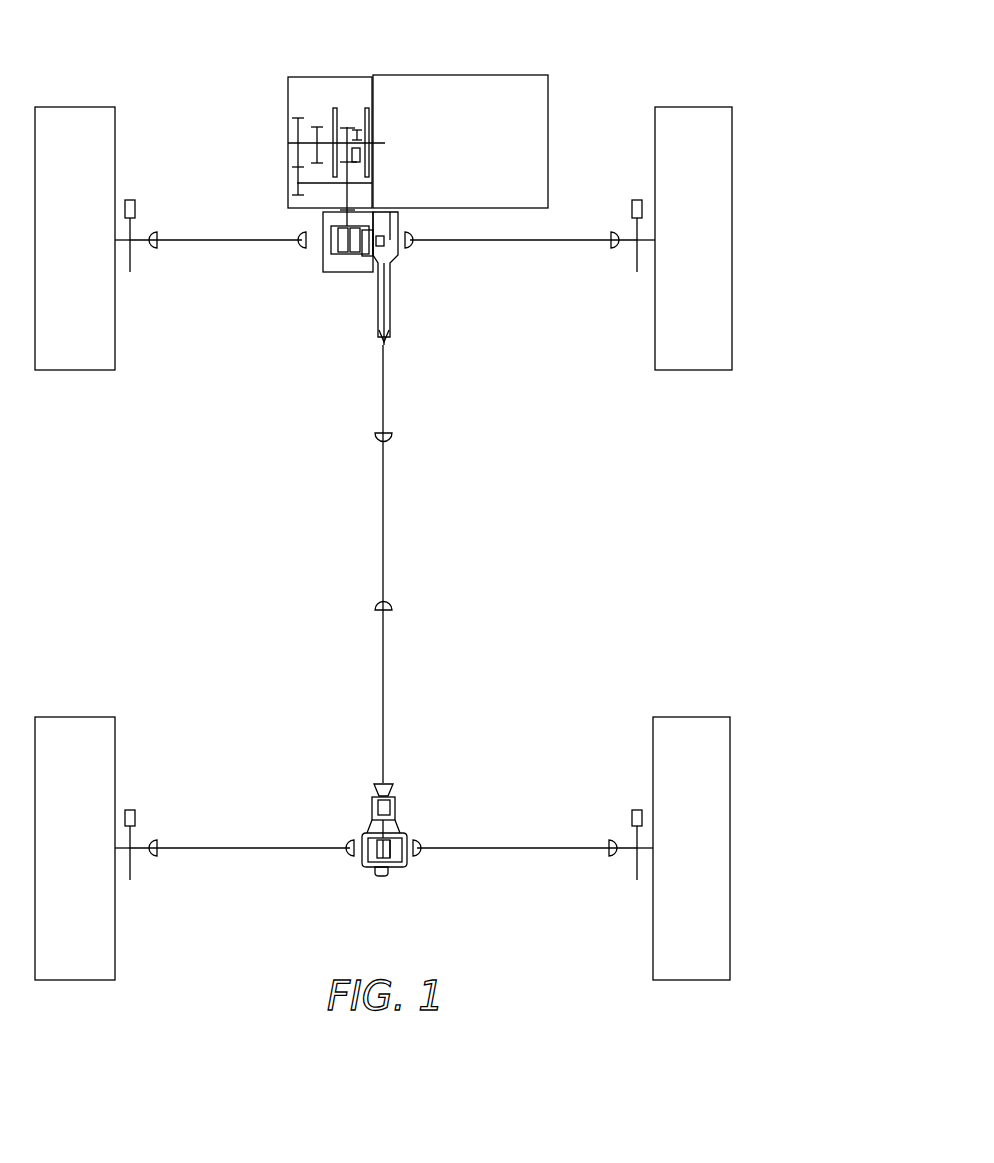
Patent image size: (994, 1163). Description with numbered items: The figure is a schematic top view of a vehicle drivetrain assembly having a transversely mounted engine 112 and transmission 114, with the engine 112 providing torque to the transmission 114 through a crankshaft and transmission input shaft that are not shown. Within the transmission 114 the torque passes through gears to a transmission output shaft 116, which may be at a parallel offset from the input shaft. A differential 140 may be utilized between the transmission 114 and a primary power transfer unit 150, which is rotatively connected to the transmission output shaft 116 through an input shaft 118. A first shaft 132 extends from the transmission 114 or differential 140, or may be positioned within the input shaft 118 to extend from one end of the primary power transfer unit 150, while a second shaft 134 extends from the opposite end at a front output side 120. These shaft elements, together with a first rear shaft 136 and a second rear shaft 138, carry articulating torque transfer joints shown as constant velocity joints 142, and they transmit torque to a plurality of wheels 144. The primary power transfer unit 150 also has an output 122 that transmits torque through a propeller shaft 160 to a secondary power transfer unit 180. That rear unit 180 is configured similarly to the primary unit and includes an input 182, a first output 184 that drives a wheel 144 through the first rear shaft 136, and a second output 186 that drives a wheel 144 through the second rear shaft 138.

The engine 112 is at (460, 76).
The transmission 114 is at (300, 76).
The transmission output shaft 116 is at (341, 206).
The input shaft 118 is at (370, 270).
The front output side 120 is at (405, 222).
The output 122 is at (389, 338).
The first shaft 132 is at (232, 243).
The second shaft 134 is at (555, 240).
The first rear shaft 136 is at (260, 846).
The second rear shaft 138 is at (535, 852).
The differential 140 is at (322, 258).
The constant velocity joints 142 is at (300, 236).
The wheels 144 is at (70, 106).
The primary power transfer unit 150 is at (409, 267).
The propeller shaft 160 is at (384, 480).
The secondary power transfer unit 180 is at (372, 828).
The input 182 is at (396, 781).
The first output 184 is at (361, 875).
The second output 186 is at (411, 869).